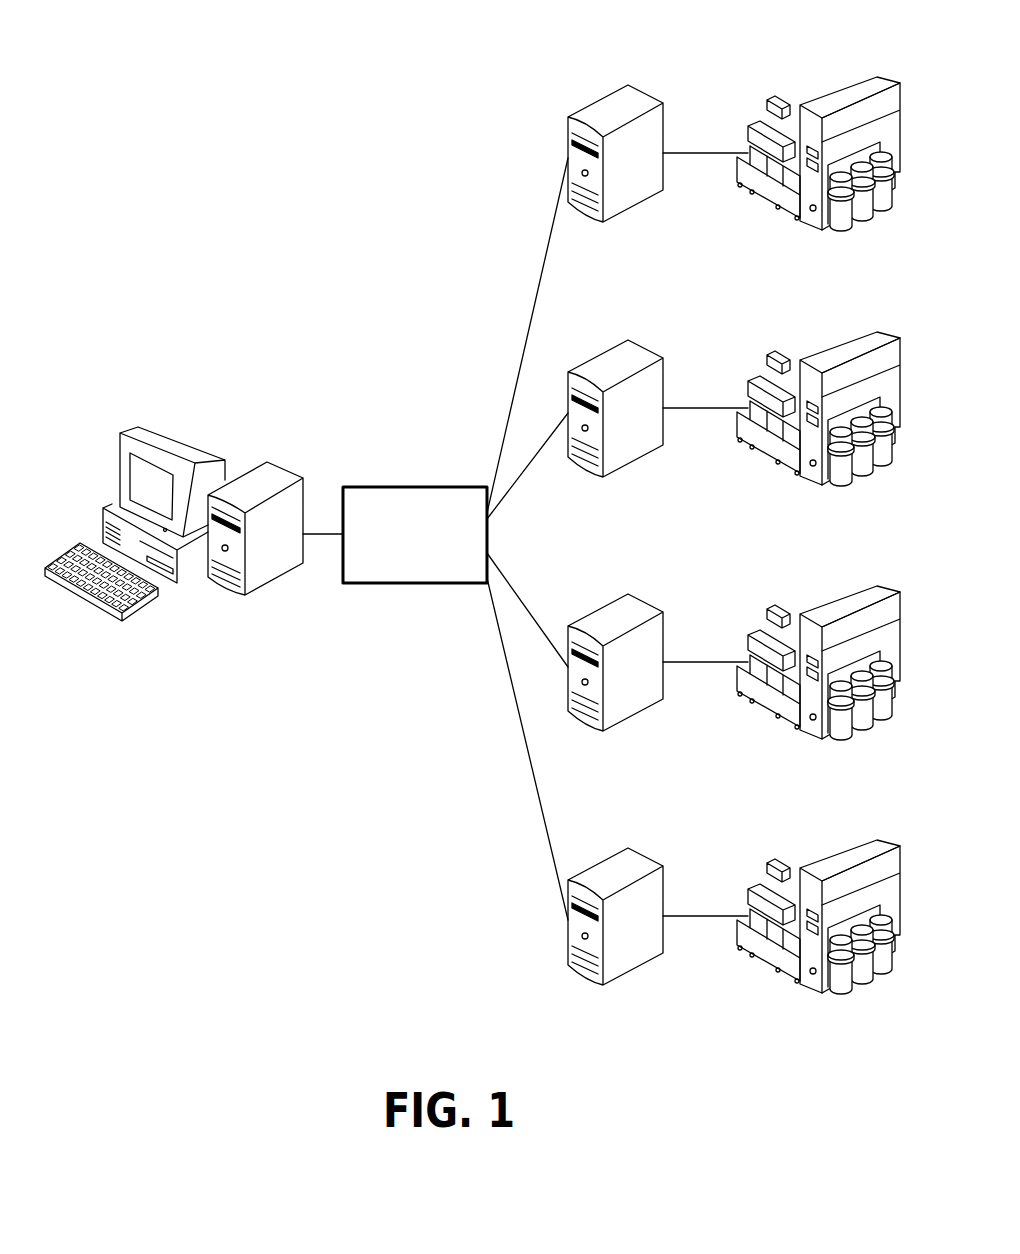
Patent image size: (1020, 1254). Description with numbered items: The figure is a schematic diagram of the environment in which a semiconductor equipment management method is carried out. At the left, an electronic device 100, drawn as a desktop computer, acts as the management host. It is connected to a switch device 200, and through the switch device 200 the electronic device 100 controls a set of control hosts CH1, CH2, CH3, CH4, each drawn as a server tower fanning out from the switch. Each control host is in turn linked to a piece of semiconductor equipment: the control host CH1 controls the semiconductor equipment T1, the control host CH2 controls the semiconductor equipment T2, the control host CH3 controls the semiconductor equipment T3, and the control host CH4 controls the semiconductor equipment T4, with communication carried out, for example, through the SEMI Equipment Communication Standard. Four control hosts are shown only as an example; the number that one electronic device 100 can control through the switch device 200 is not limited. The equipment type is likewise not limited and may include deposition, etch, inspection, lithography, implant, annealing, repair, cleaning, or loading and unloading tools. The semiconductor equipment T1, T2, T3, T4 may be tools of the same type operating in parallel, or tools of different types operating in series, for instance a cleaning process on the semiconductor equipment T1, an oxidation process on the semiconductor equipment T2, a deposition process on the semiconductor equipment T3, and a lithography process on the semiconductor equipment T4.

The electronic device 100 is at (200, 442).
The switch device 200 is at (402, 485).
The control host CH1 is at (645, 93).
The control host CH2 is at (640, 394).
The control host CH3 is at (640, 648).
The control host CH4 is at (640, 902).
The semiconductor equipment T1 is at (835, 92).
The semiconductor equipment T2 is at (818, 389).
The semiconductor equipment T3 is at (818, 643).
The semiconductor equipment T4 is at (818, 897).